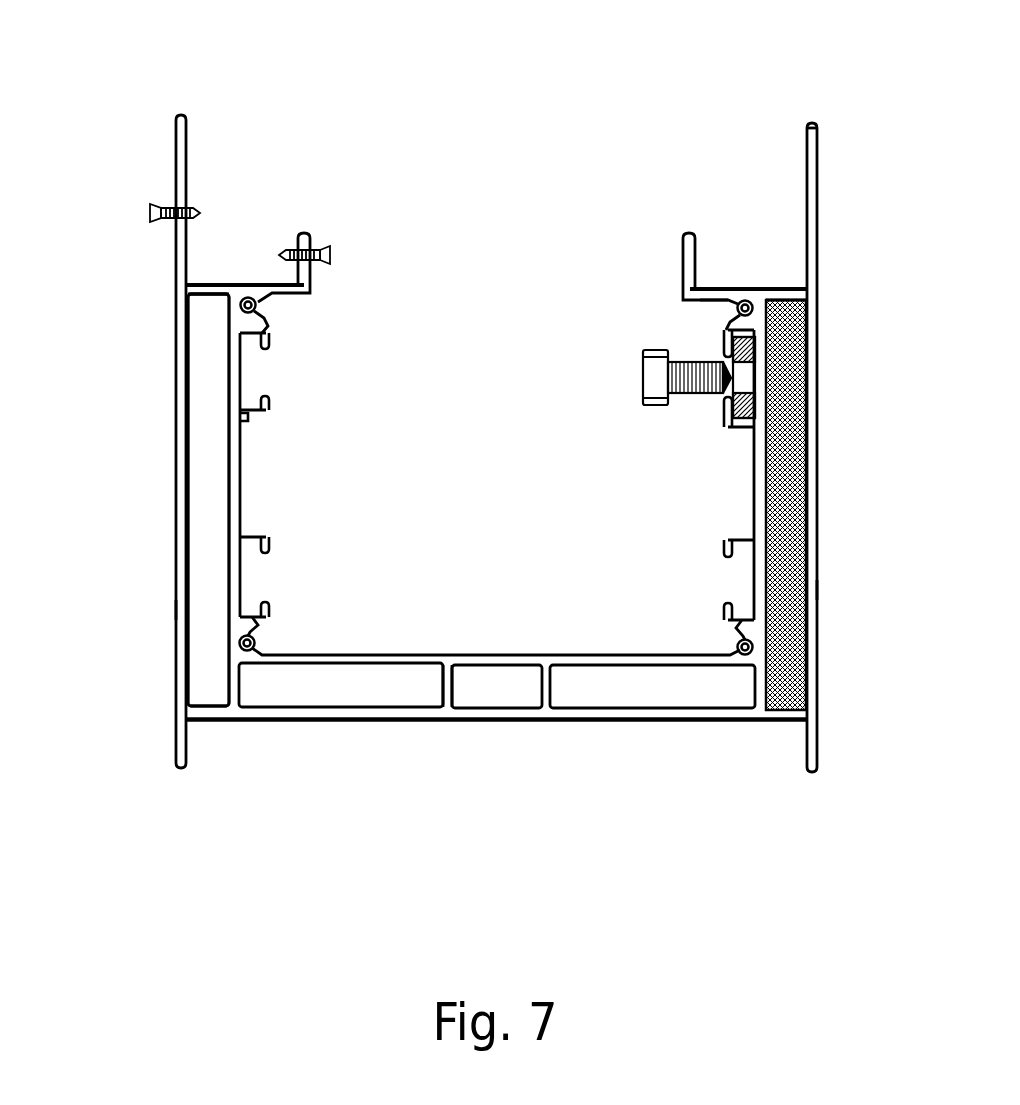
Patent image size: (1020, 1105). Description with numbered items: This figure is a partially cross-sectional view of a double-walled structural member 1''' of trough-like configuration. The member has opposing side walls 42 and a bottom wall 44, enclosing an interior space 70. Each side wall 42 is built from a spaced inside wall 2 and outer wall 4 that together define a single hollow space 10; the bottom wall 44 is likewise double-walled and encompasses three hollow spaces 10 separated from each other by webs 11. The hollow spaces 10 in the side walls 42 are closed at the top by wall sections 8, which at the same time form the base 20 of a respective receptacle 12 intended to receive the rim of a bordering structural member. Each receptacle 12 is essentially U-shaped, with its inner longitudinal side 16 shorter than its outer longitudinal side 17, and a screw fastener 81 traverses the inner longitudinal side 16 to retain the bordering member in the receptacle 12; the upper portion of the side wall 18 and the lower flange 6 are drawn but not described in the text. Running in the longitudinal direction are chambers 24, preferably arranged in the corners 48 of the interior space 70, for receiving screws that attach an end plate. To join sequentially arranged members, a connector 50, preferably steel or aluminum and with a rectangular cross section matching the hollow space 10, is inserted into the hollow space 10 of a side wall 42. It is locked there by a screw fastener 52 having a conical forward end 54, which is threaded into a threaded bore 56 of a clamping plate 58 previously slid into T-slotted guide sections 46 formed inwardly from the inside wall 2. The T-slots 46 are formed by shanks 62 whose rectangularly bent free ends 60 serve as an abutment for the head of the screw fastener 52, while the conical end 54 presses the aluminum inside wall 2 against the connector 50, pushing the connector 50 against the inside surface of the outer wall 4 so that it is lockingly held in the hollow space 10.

The structural member 1''' is at (854, 76).
The inside wall 2 is at (233, 462).
The outer wall 4 is at (180, 418).
The base plate 6 is at (205, 708).
The wall section 8 is at (204, 297).
The hollow space 10 is at (207, 497).
The web 11 is at (443, 692).
The receptacle 12 is at (243, 282).
The inner longitudinal side 16 is at (306, 237).
The outer longitudinal side 17 is at (180, 242).
The upper wall portion 18 is at (180, 160).
The base 20 is at (225, 296).
The chamber 24 is at (267, 317).
The side wall 42 is at (175, 609).
The bottom wall 44 is at (567, 725).
The T-slotted guide section 46 is at (252, 375).
The corner 48 is at (298, 616).
The connector 50 is at (795, 447).
The screw fastener 52 is at (645, 375).
The conical forward end 54 is at (725, 390).
The threaded bore 56 is at (752, 377).
The clamping plate 58 is at (737, 419).
The free end 60 is at (268, 405).
The shank 62 is at (250, 419).
The interior space 70 is at (490, 450).
The screw fastener 81 is at (150, 212).